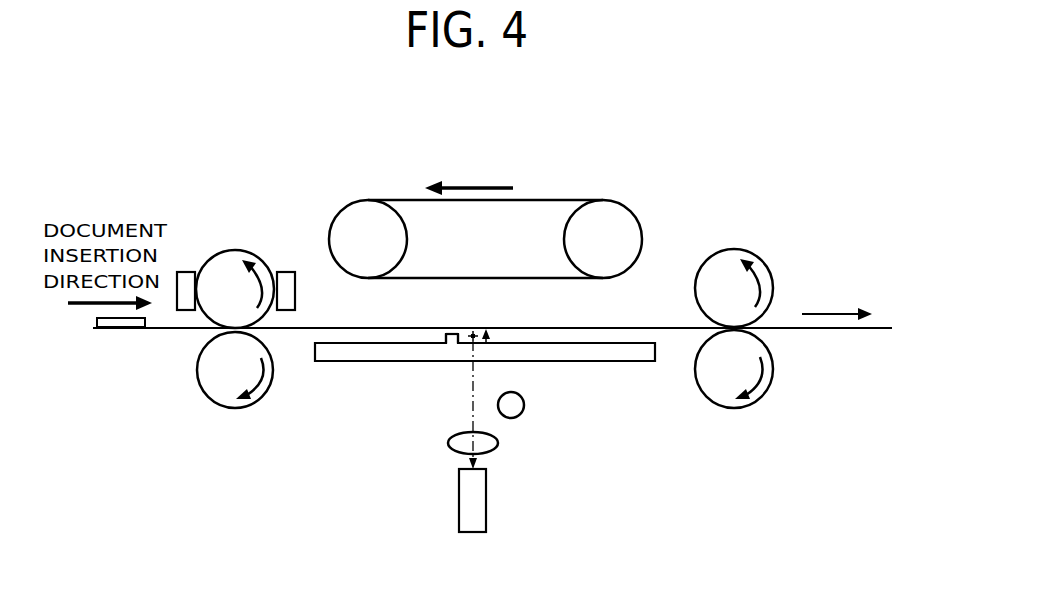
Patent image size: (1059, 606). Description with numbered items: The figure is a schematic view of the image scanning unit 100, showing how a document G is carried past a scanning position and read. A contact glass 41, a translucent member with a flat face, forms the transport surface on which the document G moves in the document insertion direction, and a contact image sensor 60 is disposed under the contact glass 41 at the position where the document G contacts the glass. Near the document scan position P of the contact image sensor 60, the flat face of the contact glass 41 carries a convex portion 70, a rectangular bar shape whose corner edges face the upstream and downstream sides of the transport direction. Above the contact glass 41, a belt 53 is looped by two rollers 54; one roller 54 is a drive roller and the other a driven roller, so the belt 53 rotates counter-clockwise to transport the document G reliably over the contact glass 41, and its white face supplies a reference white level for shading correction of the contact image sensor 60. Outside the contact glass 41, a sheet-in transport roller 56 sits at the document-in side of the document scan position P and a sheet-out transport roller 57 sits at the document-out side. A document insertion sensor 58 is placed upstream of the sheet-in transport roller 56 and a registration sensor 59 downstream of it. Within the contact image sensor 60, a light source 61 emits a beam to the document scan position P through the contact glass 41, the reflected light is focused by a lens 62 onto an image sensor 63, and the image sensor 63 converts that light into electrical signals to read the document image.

The image scanning unit 100 is at (669, 112).
The contact glass 41 is at (325, 363).
The belt 53 is at (552, 200).
The rollers 54 is at (365, 212).
The sheet-in transport roller 56 is at (236, 251).
The sheet-out transport roller 57 is at (730, 250).
The document insertion sensor 58 is at (184, 271).
The registration sensor 59 is at (290, 271).
The contact image sensor 60 is at (446, 496).
The light source 61 is at (524, 410).
The lens 62 is at (498, 448).
The image sensor 63 is at (487, 505).
The convex portion 70 is at (452, 344).
The document G is at (128, 327).
The document scan position P is at (486, 344).